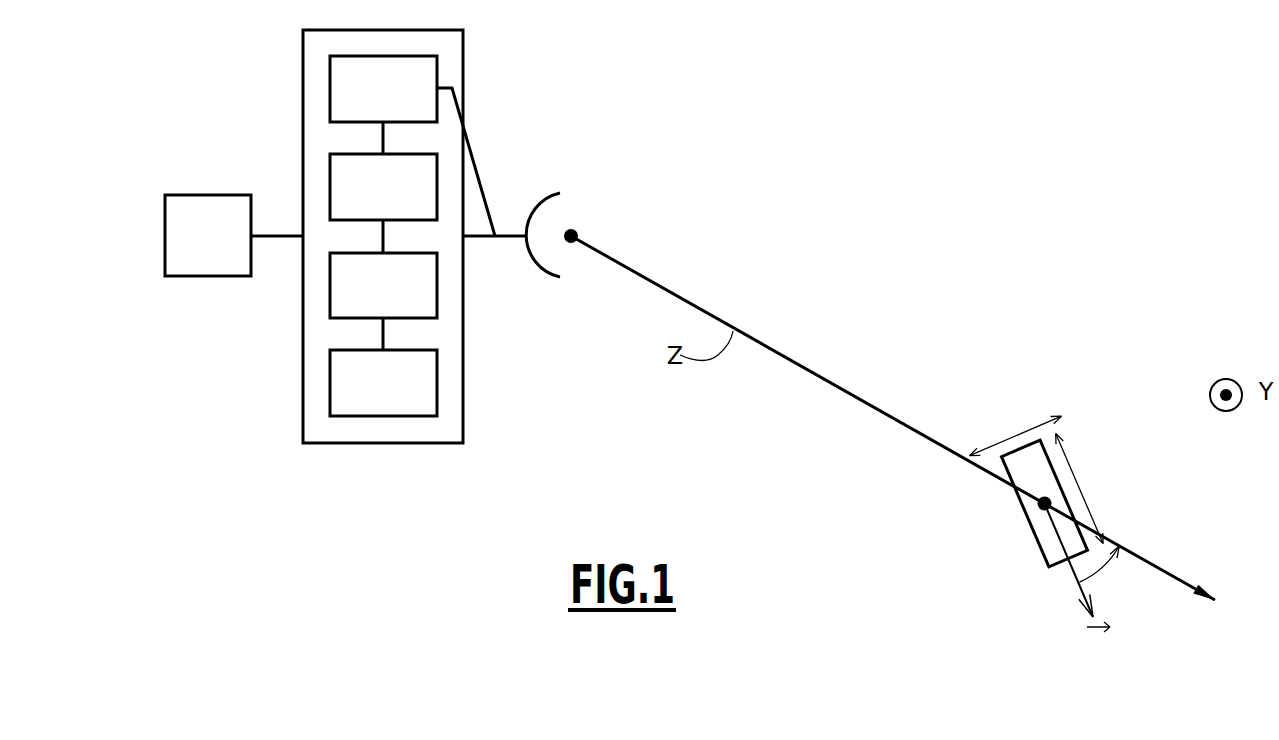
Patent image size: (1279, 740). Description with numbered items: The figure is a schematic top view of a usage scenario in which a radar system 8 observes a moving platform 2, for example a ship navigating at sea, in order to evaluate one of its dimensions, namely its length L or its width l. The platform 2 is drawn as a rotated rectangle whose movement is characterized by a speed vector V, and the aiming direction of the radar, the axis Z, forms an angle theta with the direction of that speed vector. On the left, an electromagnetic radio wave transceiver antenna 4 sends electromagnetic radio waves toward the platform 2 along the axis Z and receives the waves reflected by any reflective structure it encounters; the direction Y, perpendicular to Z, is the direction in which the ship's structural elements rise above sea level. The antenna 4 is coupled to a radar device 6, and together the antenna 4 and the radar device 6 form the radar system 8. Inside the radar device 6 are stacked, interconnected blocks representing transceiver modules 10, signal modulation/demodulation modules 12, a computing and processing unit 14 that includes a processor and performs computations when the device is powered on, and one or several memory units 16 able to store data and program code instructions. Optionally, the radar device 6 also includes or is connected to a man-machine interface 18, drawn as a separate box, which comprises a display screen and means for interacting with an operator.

The platform 2 is at (1023, 545).
The electromagnetic radio wave transceiver antenna 4 is at (580, 217).
The radar device 6 is at (463, 62).
The radar system 8 is at (373, 498).
The transceiver modules 10 is at (403, 106).
The signal modulation/demodulation modules 12 is at (403, 203).
The computing and processing unit 14 is at (403, 302).
The memory units 16 is at (403, 400).
The man-machine interface 18 is at (227, 252).